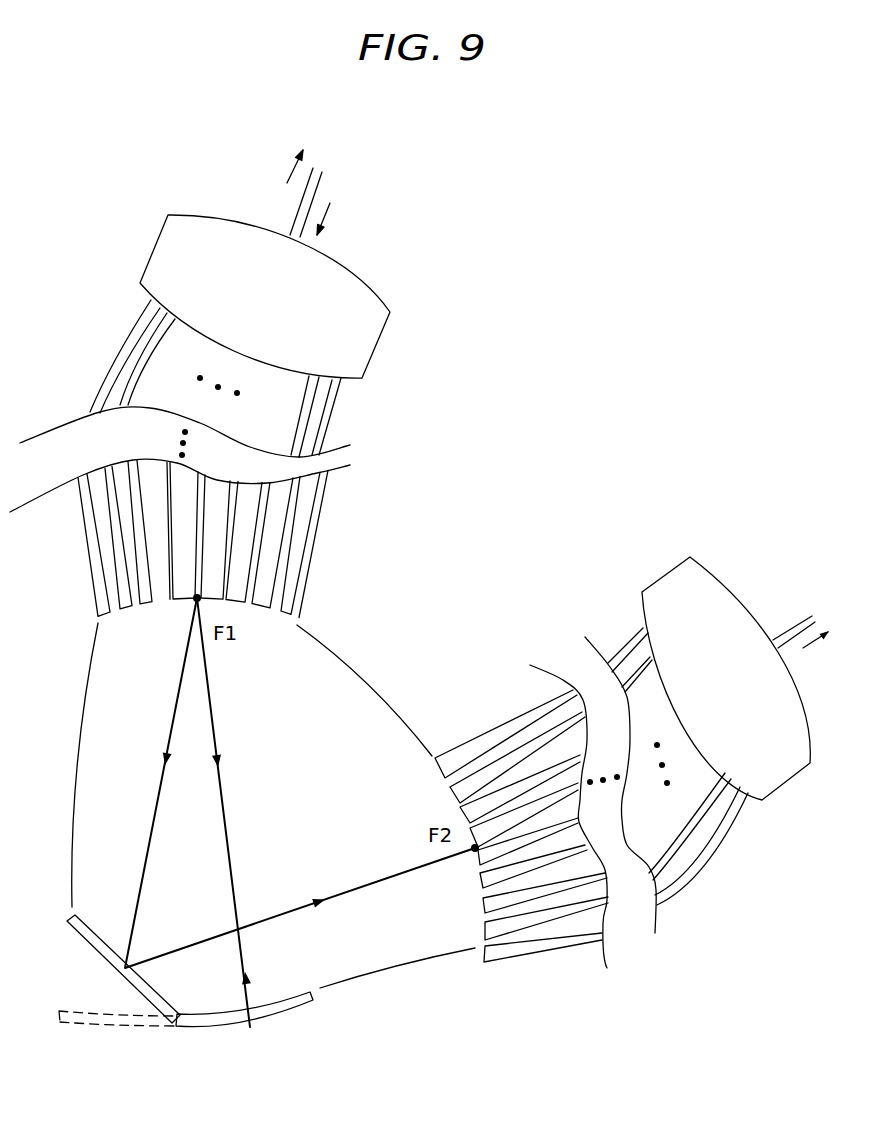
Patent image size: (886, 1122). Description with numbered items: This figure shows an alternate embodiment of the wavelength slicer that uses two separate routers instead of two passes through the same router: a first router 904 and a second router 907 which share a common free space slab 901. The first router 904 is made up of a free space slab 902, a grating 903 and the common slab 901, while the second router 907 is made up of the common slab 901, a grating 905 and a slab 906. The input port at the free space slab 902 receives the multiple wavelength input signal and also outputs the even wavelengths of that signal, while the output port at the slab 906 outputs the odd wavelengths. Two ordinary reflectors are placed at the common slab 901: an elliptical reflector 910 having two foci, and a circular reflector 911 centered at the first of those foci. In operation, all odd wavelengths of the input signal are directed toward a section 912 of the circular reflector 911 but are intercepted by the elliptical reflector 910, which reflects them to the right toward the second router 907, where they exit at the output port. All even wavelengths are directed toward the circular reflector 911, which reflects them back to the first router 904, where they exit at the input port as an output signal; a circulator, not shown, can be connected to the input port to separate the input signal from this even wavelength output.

The common free space slab 901 is at (77, 767).
The free space slab 902 is at (378, 343).
The grating 903 is at (372, 433).
The first router 904 is at (488, 345).
The grating 905 is at (627, 583).
The slab 906 is at (665, 572).
The second router 907 is at (813, 818).
The elliptical reflector 910 is at (110, 970).
The circular reflector 911 is at (230, 1024).
The section of the circular reflector 912 is at (87, 1028).